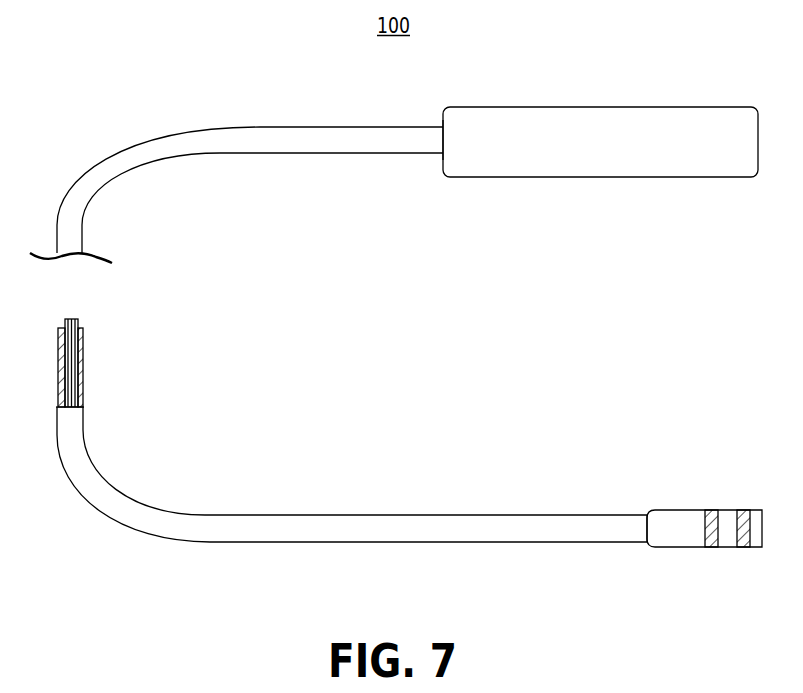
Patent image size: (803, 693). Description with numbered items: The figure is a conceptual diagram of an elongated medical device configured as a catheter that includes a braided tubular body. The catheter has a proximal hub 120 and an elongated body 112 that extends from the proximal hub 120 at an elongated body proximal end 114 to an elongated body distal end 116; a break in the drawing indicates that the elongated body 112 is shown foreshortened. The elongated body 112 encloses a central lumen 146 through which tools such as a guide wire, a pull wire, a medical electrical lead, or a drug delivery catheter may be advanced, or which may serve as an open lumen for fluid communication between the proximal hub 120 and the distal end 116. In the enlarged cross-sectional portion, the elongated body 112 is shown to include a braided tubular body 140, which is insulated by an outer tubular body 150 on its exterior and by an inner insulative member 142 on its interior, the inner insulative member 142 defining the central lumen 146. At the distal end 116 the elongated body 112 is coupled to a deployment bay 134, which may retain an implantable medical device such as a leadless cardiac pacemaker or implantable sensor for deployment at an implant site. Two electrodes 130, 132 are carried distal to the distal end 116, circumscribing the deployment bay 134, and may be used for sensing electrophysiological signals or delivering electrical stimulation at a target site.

The elongated body 112 is at (68, 197).
The elongated body proximal end 114 is at (443, 153).
The proximal hub 120 is at (598, 177).
The second tube 150 is at (57, 412).
The braided tubular body 140 is at (58, 372).
The inner insulative member 142 is at (74, 319).
The central lumen 146 is at (70, 319).
The deployment bay 134 is at (682, 510).
The elongated body distal end 116 is at (647, 540).
The electrode 132 is at (714, 547).
The electrode 130 is at (742, 547).